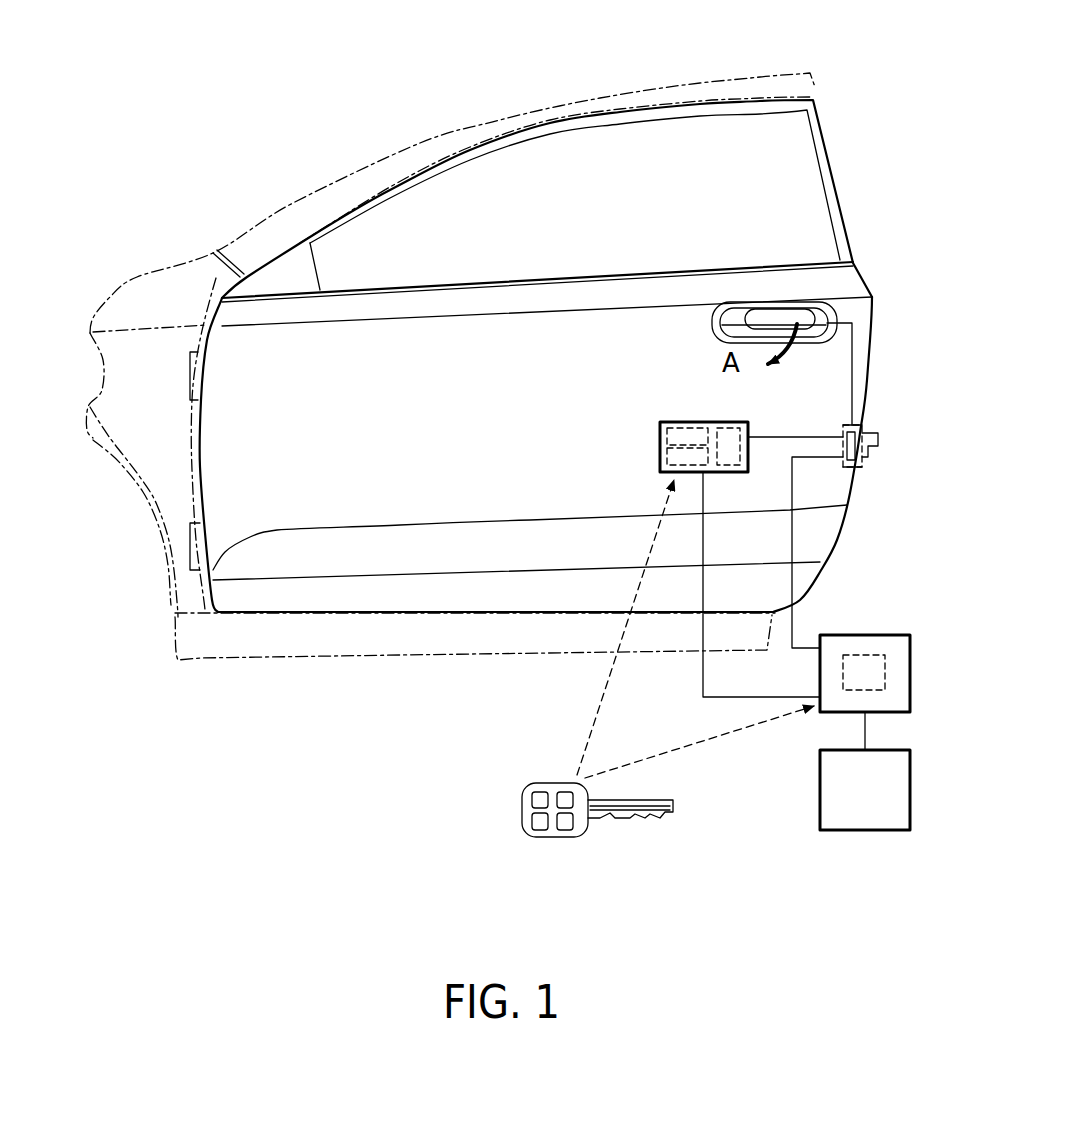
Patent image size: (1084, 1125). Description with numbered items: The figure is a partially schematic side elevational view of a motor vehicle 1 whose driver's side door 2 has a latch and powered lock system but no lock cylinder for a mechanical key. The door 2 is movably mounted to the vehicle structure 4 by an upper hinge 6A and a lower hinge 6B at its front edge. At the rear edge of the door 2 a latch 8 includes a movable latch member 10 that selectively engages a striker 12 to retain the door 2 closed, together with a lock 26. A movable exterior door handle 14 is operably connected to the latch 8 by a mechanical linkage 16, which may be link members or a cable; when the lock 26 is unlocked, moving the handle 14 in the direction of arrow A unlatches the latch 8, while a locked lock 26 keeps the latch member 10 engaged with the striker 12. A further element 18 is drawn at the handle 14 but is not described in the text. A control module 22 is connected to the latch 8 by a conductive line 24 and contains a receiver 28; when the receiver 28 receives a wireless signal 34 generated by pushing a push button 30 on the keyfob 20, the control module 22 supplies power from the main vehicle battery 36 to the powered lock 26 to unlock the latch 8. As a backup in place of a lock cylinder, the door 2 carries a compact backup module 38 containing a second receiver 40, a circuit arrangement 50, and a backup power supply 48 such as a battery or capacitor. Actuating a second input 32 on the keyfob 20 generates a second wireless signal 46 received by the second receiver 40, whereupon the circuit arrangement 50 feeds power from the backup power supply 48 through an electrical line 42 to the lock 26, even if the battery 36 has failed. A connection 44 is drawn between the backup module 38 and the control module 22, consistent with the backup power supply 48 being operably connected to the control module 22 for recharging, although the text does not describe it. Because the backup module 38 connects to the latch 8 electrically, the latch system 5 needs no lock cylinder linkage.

The motor vehicle 1 is at (688, 77).
The driver's side door 2 is at (868, 290).
The vehicle structure 4 is at (135, 492).
The latch system 5 is at (866, 504).
The hinge 6A is at (188, 378).
The hinge 6B is at (188, 545).
The latch 8 is at (857, 462).
The movable latch member 10 is at (878, 440).
The striker 12 is at (860, 425).
The exterior door handle 14 is at (827, 313).
The mechanical linkage 16 is at (855, 360).
The handle lever 18 is at (800, 320).
The keyfob 20 is at (571, 818).
The control module 22 is at (866, 632).
The conductive line 24 is at (792, 627).
The lock 26 is at (856, 459).
The receiver 28 is at (885, 655).
The push button 30 is at (566, 830).
The second input 32 is at (566, 800).
The wireless signal 34 is at (718, 738).
The battery 36 is at (820, 803).
The backup module 38 is at (667, 418).
The second receiver 40 is at (660, 457).
The electrical line 42 is at (792, 434).
The wire to receiver unit 44 is at (702, 678).
The second wireless signal 46 is at (592, 740).
The backup power supply 48 is at (660, 437).
The circuit arrangement 50 is at (729, 428).